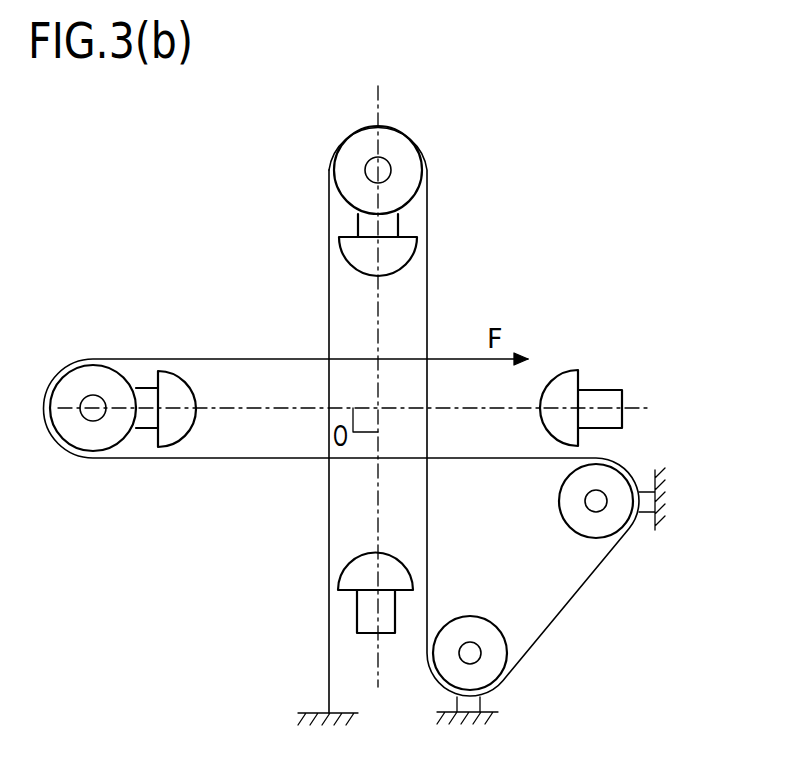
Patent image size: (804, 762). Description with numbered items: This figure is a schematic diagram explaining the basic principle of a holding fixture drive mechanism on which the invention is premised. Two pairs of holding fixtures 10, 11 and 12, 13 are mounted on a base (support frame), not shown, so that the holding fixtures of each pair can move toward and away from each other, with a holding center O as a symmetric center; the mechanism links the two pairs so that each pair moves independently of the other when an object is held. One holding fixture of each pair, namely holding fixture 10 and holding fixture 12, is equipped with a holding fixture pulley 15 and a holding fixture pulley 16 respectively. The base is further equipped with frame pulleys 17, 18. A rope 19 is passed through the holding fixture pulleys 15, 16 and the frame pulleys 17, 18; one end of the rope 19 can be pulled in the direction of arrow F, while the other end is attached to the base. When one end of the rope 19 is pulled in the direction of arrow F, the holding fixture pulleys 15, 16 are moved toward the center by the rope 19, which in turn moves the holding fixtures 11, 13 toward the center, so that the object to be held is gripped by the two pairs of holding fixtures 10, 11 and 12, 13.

The holding fixture 10 is at (410, 250).
The holding fixture 11 is at (350, 575).
The holding fixture 12 is at (177, 382).
The holding fixture 13 is at (562, 380).
The holding fixture pulley 15 is at (410, 155).
The holding fixture pulley 16 is at (97, 442).
The frame pulley 17 is at (497, 658).
The frame pulley 18 is at (608, 525).
The rope 19 is at (207, 460).